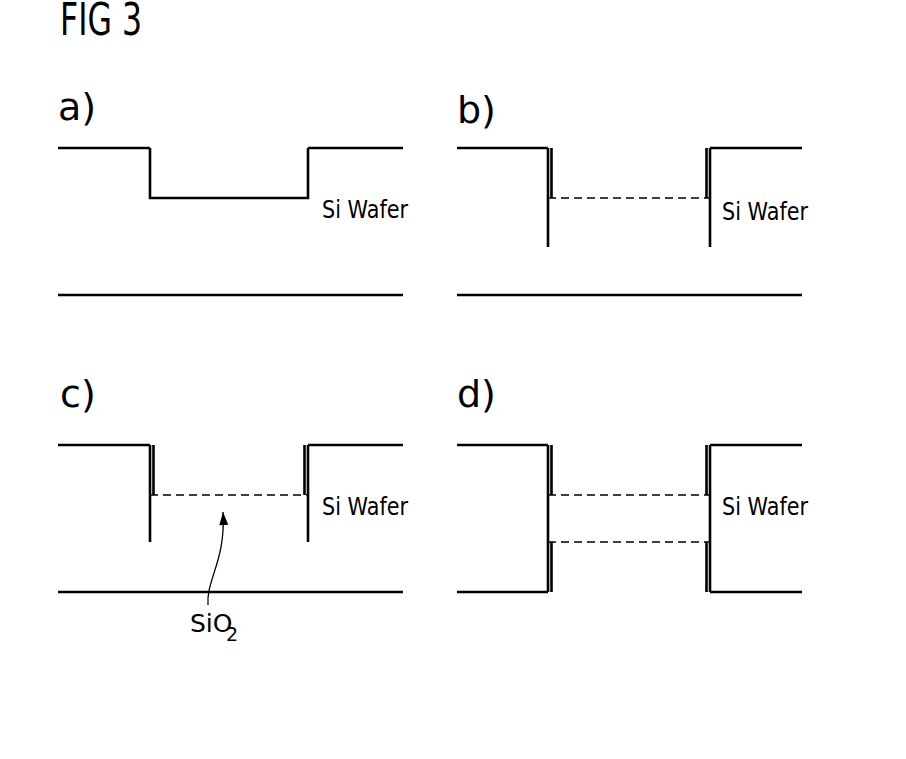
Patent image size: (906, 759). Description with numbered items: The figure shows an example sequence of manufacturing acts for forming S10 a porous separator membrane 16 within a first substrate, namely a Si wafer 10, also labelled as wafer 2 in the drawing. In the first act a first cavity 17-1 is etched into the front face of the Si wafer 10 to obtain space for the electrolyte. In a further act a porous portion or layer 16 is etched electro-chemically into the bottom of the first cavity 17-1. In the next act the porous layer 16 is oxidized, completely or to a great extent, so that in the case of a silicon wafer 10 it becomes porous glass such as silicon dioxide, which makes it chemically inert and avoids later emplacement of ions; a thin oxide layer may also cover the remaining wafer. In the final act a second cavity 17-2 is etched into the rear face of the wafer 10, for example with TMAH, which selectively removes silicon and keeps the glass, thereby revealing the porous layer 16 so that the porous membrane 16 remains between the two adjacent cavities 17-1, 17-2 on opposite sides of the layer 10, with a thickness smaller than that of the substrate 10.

The Si wafer 2 is at (430, 318).
The Si wafer 10 is at (243, 251).
The first cavity 17-1 is at (232, 165).
The second cavity 17-2 is at (597, 558).
The porous membrane 16 is at (623, 213).
The forming the porous membrane S10 is at (752, 82).